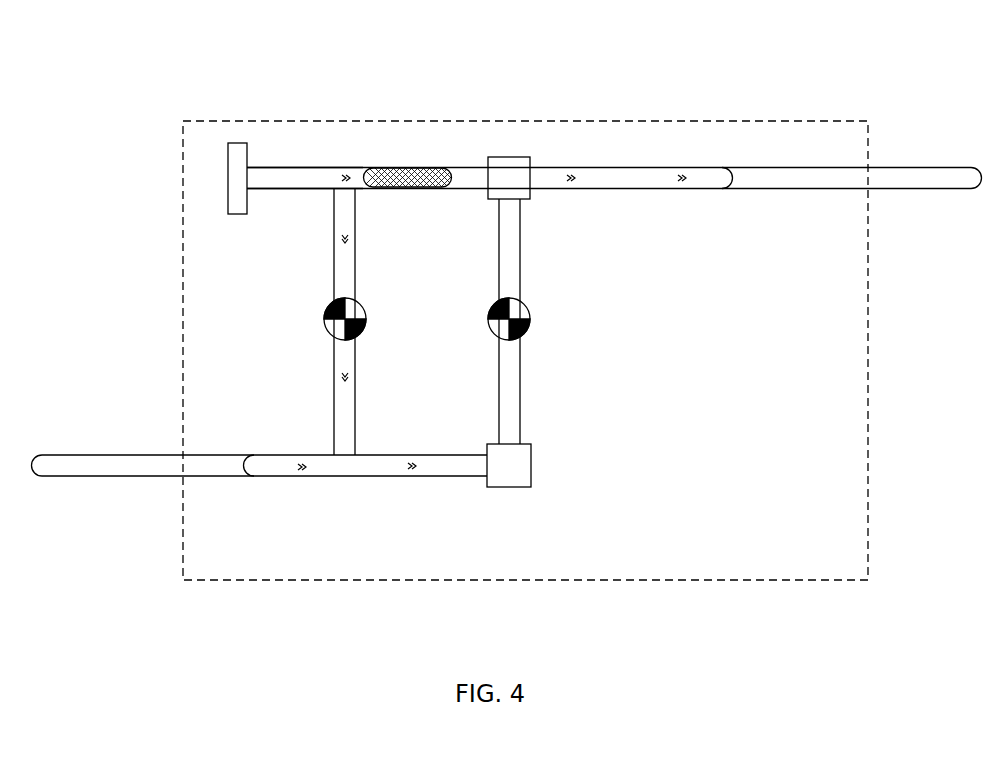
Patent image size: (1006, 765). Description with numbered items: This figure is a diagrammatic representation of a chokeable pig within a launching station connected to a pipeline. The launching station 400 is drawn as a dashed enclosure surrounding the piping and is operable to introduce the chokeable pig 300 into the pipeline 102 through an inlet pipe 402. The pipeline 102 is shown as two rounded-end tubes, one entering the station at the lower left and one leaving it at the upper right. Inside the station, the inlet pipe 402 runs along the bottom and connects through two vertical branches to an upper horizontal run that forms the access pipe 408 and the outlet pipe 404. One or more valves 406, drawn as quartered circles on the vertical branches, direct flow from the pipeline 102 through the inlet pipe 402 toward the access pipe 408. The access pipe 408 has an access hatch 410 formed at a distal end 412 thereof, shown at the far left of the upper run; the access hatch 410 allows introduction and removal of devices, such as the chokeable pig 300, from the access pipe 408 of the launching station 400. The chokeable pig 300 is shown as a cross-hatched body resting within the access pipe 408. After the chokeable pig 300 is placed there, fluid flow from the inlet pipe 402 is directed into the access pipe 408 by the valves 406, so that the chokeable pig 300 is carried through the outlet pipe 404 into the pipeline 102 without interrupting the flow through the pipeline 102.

The launching station 400 is at (717, 95).
The pipeline 102 is at (938, 173).
The chokeable pig 300 is at (415, 170).
The inlet pipe 402 is at (370, 477).
The outlet pipe 404 is at (622, 193).
The valves 406 is at (320, 317).
The access pipe 408 is at (333, 170).
The access hatch 410 is at (227, 192).
The distal end 412 is at (265, 170).